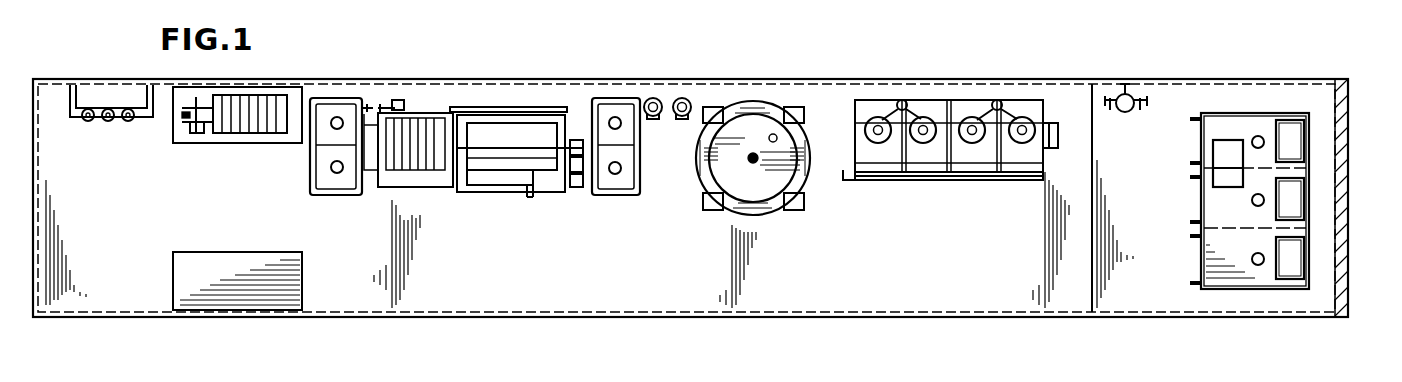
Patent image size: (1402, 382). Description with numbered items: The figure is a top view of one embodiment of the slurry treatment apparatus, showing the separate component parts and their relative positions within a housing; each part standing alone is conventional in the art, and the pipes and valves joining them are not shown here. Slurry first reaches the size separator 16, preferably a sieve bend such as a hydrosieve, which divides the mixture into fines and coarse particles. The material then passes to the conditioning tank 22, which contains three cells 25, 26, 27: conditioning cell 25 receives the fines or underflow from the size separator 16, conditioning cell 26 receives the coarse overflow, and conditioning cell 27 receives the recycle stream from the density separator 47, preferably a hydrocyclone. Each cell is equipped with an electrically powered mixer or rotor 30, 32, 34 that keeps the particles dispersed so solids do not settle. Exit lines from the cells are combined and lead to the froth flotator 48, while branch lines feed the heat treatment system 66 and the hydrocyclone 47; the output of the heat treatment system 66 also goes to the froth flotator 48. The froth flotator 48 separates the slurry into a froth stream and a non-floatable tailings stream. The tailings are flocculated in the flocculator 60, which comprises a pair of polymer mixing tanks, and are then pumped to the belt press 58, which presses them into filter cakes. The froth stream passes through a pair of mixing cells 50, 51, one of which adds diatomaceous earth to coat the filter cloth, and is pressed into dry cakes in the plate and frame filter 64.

The size separator 16 is at (1225, 140).
The conditioning tank 22 is at (1264, 202).
The conditioning cell 25 is at (1313, 162).
The conditioning cell 26 is at (1313, 208).
The conditioning cell 27 is at (1305, 270).
The mixer or rotor 30 is at (1259, 136).
The mixer or rotor 32 is at (1252, 200).
The mixer or rotor 34 is at (1256, 265).
The density separator 47 is at (1135, 100).
The froth flotator 48 is at (960, 105).
The mixing cell 50 is at (340, 103).
The mixing cell 51 is at (336, 146).
The belt press 58 is at (525, 135).
The flocculator 60 is at (625, 110).
The plate and frame filter 64 is at (252, 130).
The heat treatment system 66 is at (732, 208).